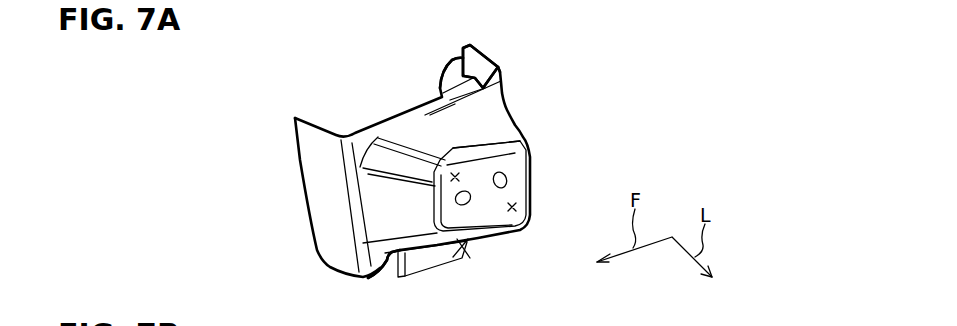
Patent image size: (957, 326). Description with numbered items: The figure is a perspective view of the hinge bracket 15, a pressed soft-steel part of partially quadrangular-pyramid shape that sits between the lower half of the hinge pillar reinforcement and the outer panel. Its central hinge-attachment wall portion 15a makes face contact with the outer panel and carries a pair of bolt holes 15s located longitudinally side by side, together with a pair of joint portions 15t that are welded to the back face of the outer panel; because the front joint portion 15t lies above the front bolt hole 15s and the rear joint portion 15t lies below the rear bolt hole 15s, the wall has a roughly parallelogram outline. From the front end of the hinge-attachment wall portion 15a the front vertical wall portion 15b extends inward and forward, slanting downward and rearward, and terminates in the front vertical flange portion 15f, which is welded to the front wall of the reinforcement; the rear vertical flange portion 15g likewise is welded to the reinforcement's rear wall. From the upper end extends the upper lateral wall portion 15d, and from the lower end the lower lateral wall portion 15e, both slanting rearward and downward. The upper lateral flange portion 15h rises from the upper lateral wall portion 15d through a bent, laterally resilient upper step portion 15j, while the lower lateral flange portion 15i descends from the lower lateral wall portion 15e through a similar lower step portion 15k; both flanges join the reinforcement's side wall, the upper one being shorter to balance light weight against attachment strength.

The hinge bracket 15 is at (343, 77).
The hinge-attachment wall portion 15a is at (517, 160).
The front vertical wall portion 15b is at (393, 222).
The upper lateral wall portion 15d is at (492, 118).
The lower lateral wall portion 15e is at (466, 255).
The front vertical flange portion 15f is at (320, 197).
The rear vertical flange portion 15g is at (485, 58).
The upper lateral flange portion 15h is at (454, 72).
The lower lateral flange portion 15i is at (428, 262).
The upper step portion 15j is at (440, 95).
The lower step portion 15k is at (406, 255).
The bolt holes 15s is at (498, 188).
The joint portions 15t is at (453, 174).